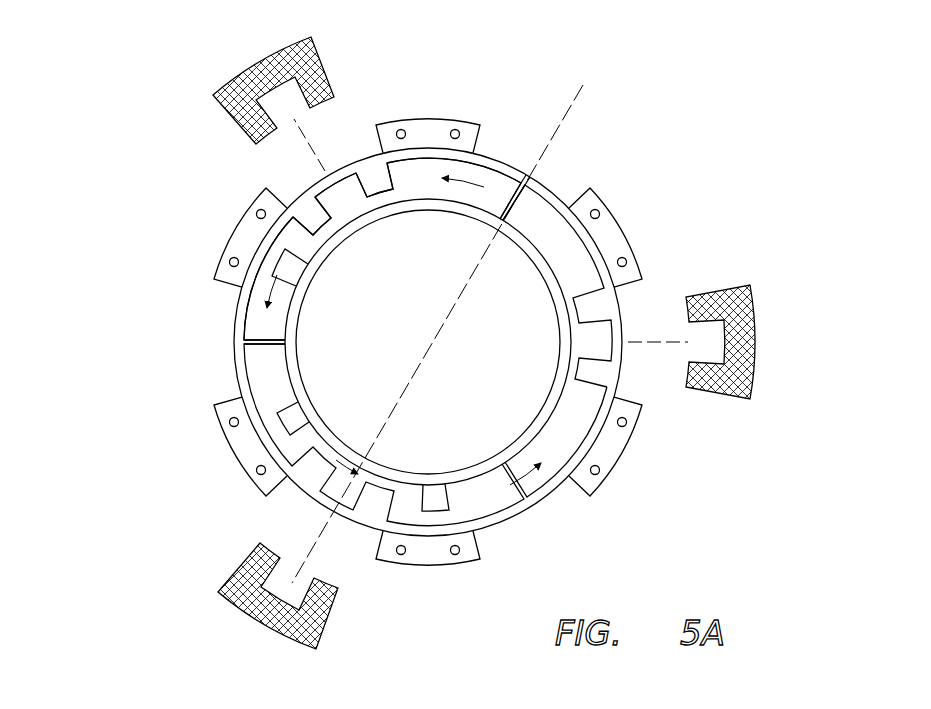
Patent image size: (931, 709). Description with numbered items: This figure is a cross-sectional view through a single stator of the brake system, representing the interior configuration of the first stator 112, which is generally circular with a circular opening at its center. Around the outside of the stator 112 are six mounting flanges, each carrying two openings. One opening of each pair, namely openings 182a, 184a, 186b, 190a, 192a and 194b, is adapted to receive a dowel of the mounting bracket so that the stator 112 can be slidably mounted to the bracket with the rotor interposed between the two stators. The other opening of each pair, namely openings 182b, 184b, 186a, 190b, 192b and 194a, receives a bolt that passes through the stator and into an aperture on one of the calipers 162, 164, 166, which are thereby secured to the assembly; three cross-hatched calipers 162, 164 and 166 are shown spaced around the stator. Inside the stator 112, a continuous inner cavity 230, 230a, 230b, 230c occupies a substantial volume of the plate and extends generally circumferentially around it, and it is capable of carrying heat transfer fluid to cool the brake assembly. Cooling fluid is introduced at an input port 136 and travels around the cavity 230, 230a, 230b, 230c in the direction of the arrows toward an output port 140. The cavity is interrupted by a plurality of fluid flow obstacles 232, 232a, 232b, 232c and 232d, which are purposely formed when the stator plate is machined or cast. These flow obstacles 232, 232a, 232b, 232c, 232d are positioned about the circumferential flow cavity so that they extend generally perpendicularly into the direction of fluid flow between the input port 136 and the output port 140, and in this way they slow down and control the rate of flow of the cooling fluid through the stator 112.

The first stator 112 is at (158, 340).
The input port 136 is at (545, 118).
The output port 140 is at (564, 189).
The caliper 162 is at (296, 77).
The caliper 164 is at (752, 300).
The caliper 166 is at (300, 650).
The opening 182a is at (458, 130).
The opening 182b is at (403, 129).
The opening 184a is at (600, 212).
The opening 184b is at (627, 261).
The opening 186a is at (627, 423).
The opening 186b is at (600, 472).
The opening 190a is at (460, 554).
The opening 190b is at (405, 556).
The opening 192a is at (230, 427).
The opening 192b is at (258, 474).
The opening 194a is at (258, 212).
The opening 194b is at (228, 262).
The continuous inner cavity 230 is at (437, 185).
The continuous inner cavity 230a is at (342, 148).
The continuous inner cavity 230b is at (293, 218).
The continuous inner cavity 230c is at (262, 300).
The fluid flow obstacle 232 is at (375, 182).
The fluid flow obstacle 232a is at (308, 205).
The fluid flow obstacle 232b is at (287, 262).
The fluid flow obstacle 232c is at (265, 335).
The fluid flow obstacle 232d is at (250, 352).